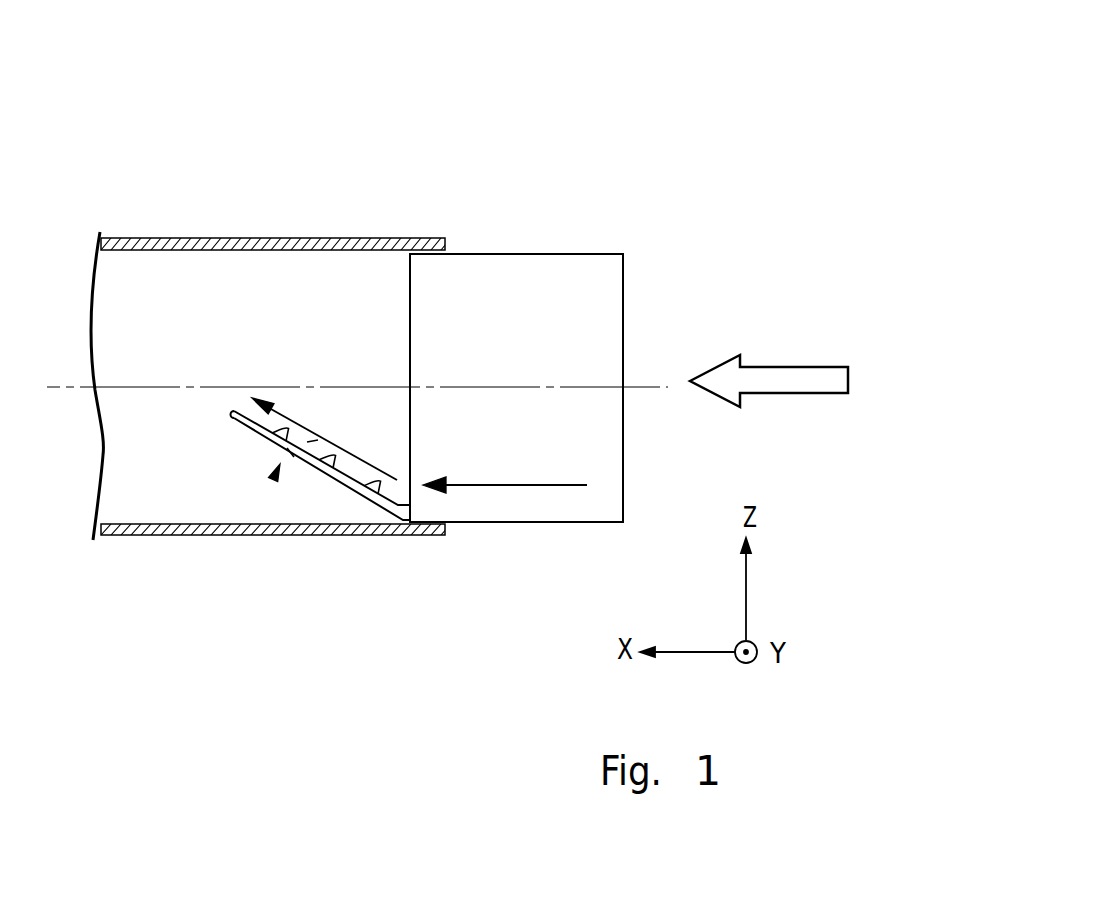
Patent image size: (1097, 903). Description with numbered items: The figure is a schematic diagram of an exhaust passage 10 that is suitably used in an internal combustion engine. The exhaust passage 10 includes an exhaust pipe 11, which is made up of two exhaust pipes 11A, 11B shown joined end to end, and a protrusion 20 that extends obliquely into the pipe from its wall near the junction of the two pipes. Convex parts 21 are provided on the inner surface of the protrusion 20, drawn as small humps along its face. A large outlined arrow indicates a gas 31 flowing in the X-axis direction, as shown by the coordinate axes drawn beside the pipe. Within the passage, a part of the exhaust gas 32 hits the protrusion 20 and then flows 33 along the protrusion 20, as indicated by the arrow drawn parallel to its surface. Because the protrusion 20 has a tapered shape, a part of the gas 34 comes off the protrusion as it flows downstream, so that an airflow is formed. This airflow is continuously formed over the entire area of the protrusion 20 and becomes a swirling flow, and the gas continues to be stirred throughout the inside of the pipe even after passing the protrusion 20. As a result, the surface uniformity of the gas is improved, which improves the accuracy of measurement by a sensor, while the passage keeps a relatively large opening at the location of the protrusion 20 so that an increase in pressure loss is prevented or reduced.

The exhaust passage 10 is at (694, 89).
The exhaust pipe 11 is at (484, 131).
The exhaust pipe 11A is at (478, 265).
The exhaust pipe 11B is at (375, 238).
The protrusion 20 is at (367, 492).
The convex parts 21 is at (323, 460).
The gas 31 is at (782, 387).
The exhaust gas 32 is at (507, 485).
The flow along the protrusion 33 is at (252, 400).
The gas coming off the protrusion 34 is at (273, 481).